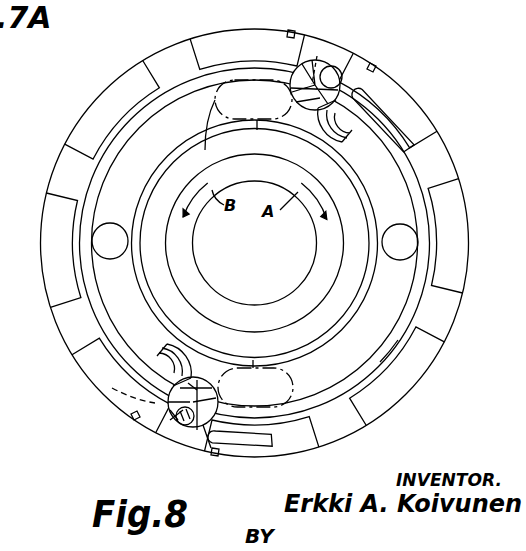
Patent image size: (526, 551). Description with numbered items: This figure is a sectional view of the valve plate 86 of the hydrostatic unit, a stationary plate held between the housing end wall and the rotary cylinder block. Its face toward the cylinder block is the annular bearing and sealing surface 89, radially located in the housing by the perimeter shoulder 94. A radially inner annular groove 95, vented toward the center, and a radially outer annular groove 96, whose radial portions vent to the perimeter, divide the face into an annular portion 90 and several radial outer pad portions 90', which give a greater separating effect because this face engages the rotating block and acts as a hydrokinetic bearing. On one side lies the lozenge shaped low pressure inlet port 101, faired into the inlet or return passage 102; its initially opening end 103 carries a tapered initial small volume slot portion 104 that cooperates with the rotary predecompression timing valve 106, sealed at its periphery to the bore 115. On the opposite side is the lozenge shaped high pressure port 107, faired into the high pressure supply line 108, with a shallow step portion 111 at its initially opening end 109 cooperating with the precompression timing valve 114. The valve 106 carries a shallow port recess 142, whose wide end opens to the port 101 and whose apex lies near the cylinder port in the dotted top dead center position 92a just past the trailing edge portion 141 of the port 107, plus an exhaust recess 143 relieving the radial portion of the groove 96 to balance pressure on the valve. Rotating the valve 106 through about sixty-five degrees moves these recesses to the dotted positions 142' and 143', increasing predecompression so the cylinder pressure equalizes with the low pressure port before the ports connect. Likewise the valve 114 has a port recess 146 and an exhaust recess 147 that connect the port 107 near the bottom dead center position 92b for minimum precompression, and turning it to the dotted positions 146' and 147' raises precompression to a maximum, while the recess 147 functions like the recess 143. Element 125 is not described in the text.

The valve plate 86 is at (465, 181).
The bearing and sealing surface 89 is at (97, 111).
The annular portion 90 is at (428, 350).
The radial outer pad portions 90' is at (411, 376).
The top dead center position 92a is at (255, 181).
The bottom dead center position 92b is at (255, 304).
The shoulder 94 is at (44, 295).
The radially inner annular groove 95 is at (163, 212).
The radially outer annular groove 96 is at (75, 222).
The low pressure inlet port 101 is at (402, 309).
The inlet or return passage 102 is at (404, 244).
The initially opening end 103 is at (317, 124).
The tapered initial small volume slot portion 104 is at (336, 130).
The rotary predecompression timing valve 106 is at (300, 63).
The high pressure port 107 is at (108, 181).
The high pressure supply line 108 is at (116, 259).
The initially opening end 109 is at (183, 362).
The shallow step portion 111 is at (168, 360).
The precompression timing valve 114 is at (188, 383).
The bore 115 is at (331, 70).
The port 125 is at (255, 383).
The trailing edge portion 141 is at (205, 150).
The port recess 142 is at (257, 105).
The dotted line position of port recess 142' is at (388, 102).
The exhaust recess 143 is at (338, 68).
The dotted line position of exhaust recess 143' is at (329, 45).
The port recess 146 is at (201, 427).
The maximum precompression position of port recess 146' is at (127, 392).
The exhaust recess 147 is at (152, 438).
The maximum precompression position of exhaust recess 147' is at (262, 435).